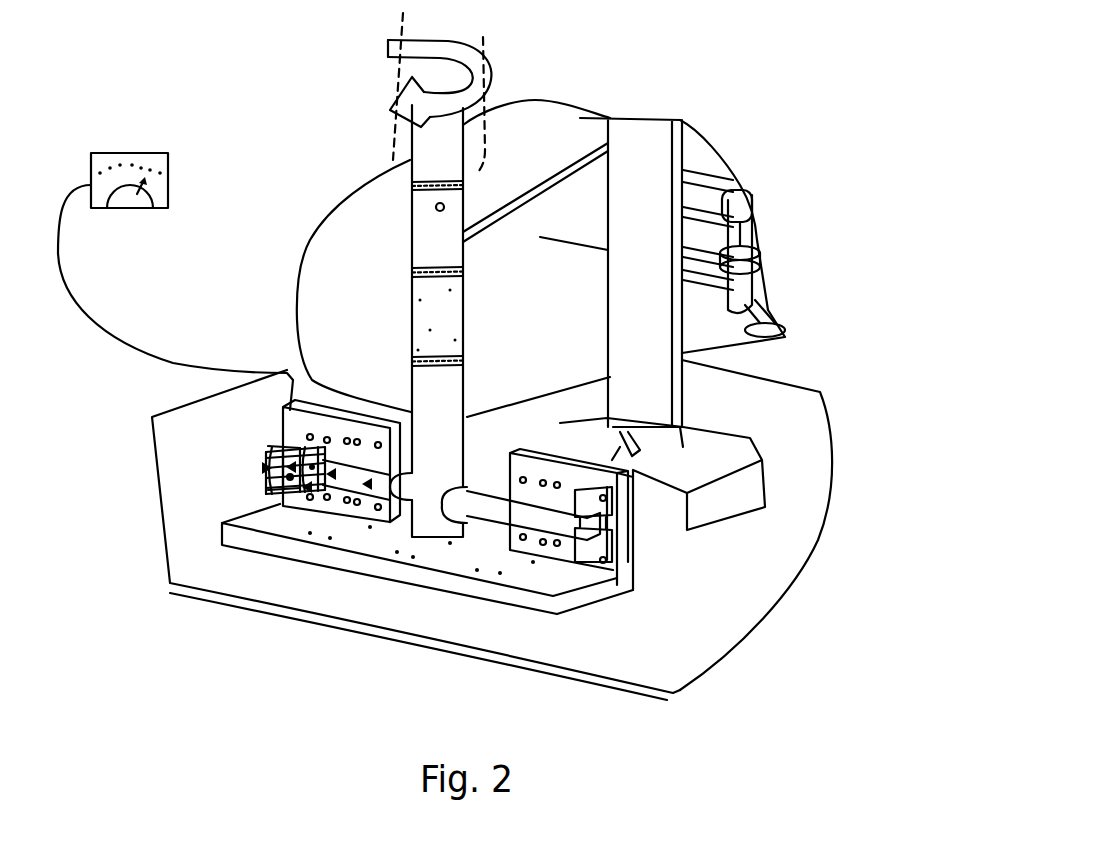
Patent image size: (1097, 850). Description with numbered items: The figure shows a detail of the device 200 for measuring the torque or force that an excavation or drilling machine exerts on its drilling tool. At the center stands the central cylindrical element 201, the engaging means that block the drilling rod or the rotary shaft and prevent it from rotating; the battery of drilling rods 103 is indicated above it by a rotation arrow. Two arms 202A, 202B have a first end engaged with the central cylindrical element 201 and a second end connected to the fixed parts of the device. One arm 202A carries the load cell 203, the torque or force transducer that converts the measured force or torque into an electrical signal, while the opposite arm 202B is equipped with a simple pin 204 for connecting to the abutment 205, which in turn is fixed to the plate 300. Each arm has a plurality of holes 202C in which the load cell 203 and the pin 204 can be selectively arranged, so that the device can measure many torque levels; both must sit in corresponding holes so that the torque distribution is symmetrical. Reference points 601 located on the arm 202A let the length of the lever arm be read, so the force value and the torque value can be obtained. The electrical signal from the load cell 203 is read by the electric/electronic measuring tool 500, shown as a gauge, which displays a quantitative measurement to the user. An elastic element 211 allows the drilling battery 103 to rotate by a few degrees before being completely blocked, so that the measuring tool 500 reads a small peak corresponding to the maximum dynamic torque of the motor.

The battery of drilling rods 103 is at (503, 98).
The device for measuring torque or force 200 is at (544, 705).
The central cylindrical element 201 is at (435, 240).
The arm 202A is at (362, 425).
The arm 202B is at (560, 613).
The holes 202C is at (537, 505).
The load cell 203 is at (277, 447).
The pin 204 is at (604, 548).
The abutment 205 is at (431, 500).
The elastic element 211 is at (467, 293).
The plate 300 is at (483, 628).
The electric/electronic measuring tool 500 is at (132, 163).
The reference points 601 is at (273, 463).